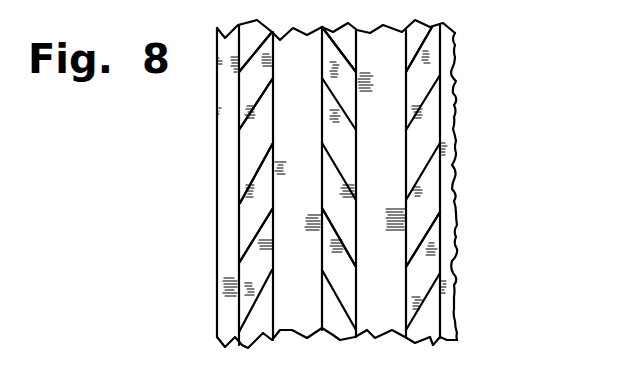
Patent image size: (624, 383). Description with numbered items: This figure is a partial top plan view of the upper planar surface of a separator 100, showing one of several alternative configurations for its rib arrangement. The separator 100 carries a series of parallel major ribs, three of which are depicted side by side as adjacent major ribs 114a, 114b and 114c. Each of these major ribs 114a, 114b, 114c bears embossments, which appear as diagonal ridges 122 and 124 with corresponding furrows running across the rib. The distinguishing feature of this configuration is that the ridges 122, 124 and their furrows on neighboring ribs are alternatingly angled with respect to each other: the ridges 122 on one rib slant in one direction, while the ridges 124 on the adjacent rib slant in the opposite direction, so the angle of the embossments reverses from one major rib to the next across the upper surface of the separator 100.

The separator 100 is at (497, 121).
The major rib 114a is at (242, 114).
The major rib 114b is at (273, 159).
The major rib 114c is at (406, 207).
The ridge 122 is at (272, 95).
The ridge 124 is at (273, 159).